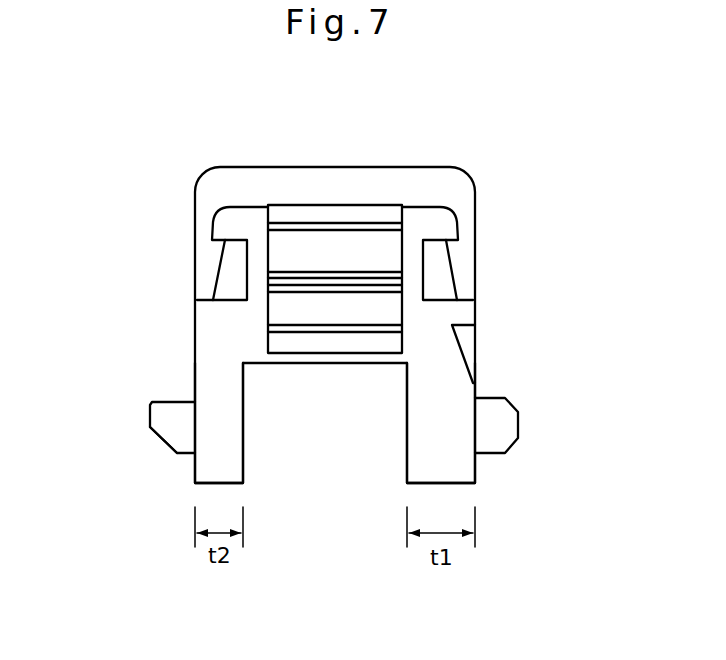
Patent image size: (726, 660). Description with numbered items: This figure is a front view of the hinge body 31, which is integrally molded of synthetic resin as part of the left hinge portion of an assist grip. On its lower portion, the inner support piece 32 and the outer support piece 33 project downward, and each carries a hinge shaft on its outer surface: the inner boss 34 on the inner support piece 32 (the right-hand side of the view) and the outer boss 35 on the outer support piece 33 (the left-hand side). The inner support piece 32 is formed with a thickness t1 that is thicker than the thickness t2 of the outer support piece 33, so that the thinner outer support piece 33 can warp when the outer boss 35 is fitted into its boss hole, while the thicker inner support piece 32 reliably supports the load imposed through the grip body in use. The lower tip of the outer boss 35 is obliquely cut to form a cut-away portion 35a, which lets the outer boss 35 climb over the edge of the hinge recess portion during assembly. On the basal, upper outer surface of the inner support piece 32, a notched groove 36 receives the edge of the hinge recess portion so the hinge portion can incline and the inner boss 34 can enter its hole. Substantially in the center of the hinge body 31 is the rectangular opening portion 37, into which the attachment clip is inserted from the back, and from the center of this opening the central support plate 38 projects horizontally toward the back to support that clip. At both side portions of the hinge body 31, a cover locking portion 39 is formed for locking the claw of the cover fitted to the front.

The hinge body 31 is at (168, 204).
The inner support piece 32 is at (420, 457).
The outer support piece 33 is at (237, 458).
The inner boss 34 is at (507, 422).
The outer boss 35 is at (163, 415).
The cut-away portion 35a is at (167, 447).
The notched groove 36 is at (460, 348).
The rectangular opening portion 37 is at (338, 247).
The central support plate 38 is at (297, 283).
The cover locking portion 39 is at (220, 266).